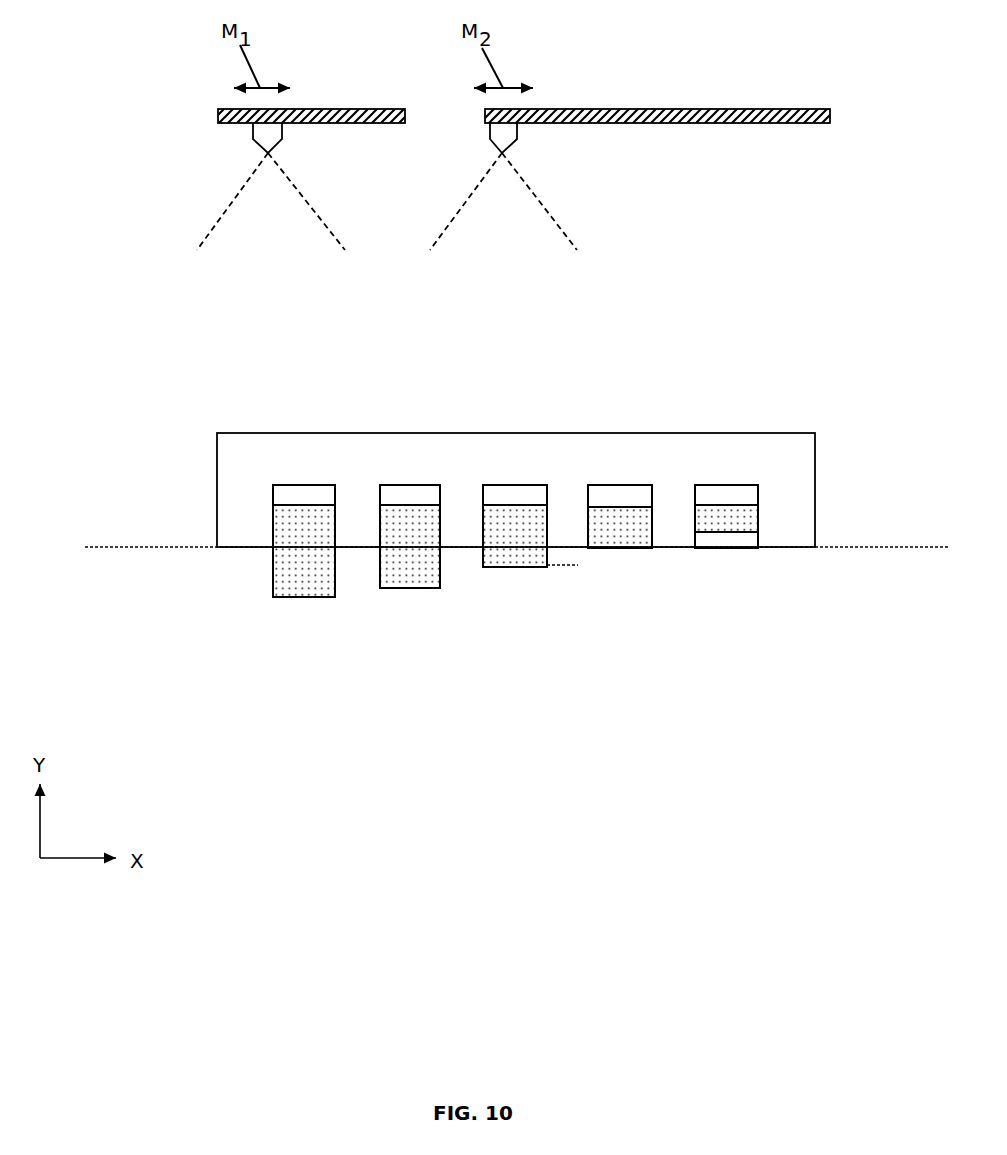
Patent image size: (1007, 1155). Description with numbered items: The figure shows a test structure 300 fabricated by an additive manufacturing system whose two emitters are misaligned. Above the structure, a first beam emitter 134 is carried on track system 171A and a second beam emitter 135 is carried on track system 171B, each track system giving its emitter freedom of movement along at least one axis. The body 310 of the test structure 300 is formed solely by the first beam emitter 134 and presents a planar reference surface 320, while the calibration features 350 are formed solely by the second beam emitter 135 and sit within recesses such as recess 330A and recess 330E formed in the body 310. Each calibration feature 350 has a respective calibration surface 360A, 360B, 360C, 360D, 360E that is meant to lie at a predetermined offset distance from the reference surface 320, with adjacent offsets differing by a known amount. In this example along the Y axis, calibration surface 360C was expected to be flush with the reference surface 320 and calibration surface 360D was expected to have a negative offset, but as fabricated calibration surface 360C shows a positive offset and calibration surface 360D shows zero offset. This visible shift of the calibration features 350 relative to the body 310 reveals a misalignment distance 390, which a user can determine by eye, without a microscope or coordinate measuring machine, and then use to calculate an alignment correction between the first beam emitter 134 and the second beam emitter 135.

The track system 171A is at (317, 118).
The track system 171B is at (718, 118).
The first beam emitter 134 is at (278, 138).
The second beam emitter 135 is at (508, 142).
The test structure 300 is at (764, 246).
The body 310 is at (300, 431).
The reference surface 320 is at (793, 550).
The recess 330A is at (272, 528).
The recess 330E is at (760, 538).
The calibration features 350 is at (704, 511).
The calibration surface 360A is at (300, 598).
The calibration surface 360B is at (410, 589).
The calibration surface 360C is at (512, 568).
The calibration surface 360D is at (615, 549).
The calibration surface 360E is at (722, 533).
The misalignment distance 390 is at (588, 548).